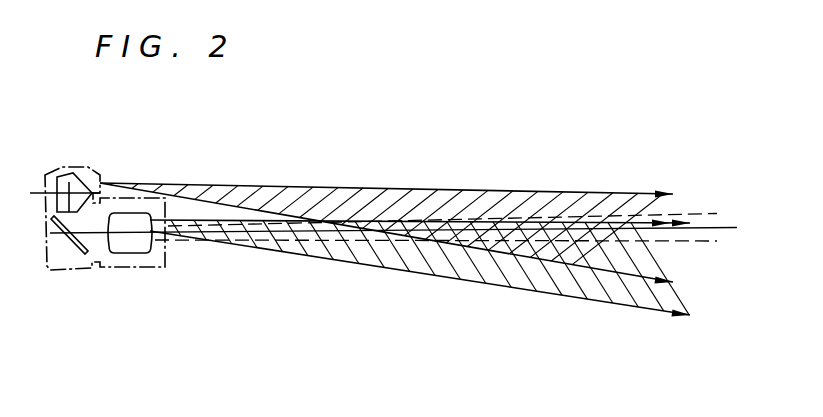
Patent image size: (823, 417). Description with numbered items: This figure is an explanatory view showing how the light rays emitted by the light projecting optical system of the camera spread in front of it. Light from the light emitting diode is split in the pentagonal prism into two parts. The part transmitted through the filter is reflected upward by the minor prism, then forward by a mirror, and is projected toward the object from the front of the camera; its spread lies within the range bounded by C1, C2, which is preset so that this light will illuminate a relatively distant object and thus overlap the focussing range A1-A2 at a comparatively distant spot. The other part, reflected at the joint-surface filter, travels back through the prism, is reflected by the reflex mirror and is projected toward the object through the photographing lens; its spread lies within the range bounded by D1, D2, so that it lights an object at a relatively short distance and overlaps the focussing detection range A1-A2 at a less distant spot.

The spread range boundary of finder-projected light C1 is at (617, 192).
The spread range boundary of finder-projected light C2 is at (612, 282).
The spread range boundary of lens-projected light D1 is at (679, 220).
The spread range boundary of lens-projected light D2 is at (667, 318).
The focussing range boundary A1 is at (707, 217).
The focussing range boundary A2 is at (713, 242).